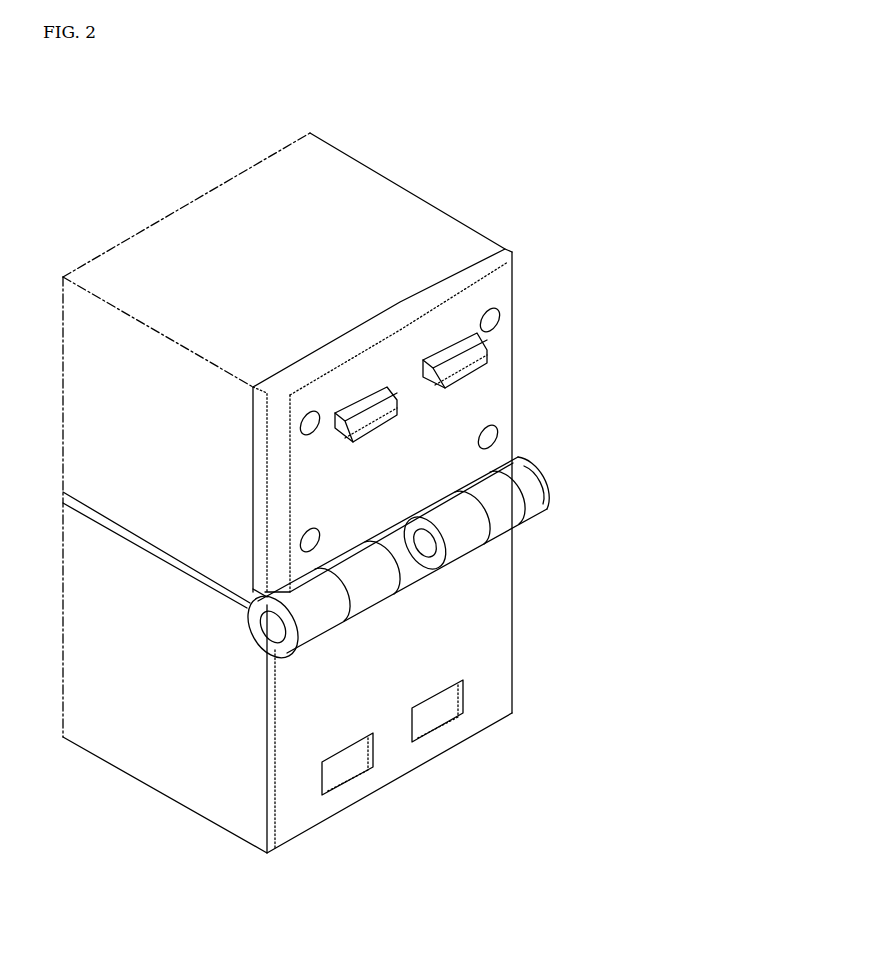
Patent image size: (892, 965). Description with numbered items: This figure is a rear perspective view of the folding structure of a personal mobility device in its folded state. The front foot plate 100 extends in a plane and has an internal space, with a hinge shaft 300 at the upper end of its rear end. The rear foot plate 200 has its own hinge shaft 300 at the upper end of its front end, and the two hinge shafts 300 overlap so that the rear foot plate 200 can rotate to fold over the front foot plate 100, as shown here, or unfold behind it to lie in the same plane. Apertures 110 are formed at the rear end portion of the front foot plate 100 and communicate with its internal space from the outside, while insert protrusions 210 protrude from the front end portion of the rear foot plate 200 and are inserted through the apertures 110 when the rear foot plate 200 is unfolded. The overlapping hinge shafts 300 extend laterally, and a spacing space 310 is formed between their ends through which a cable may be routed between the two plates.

The front foot plate 100 is at (162, 755).
The apertures 110 is at (440, 717).
The rear foot plate 200 is at (400, 202).
The insert protrusions 210 is at (482, 350).
The hinge shaft 300 is at (556, 498).
The spacing space 310 is at (400, 562).